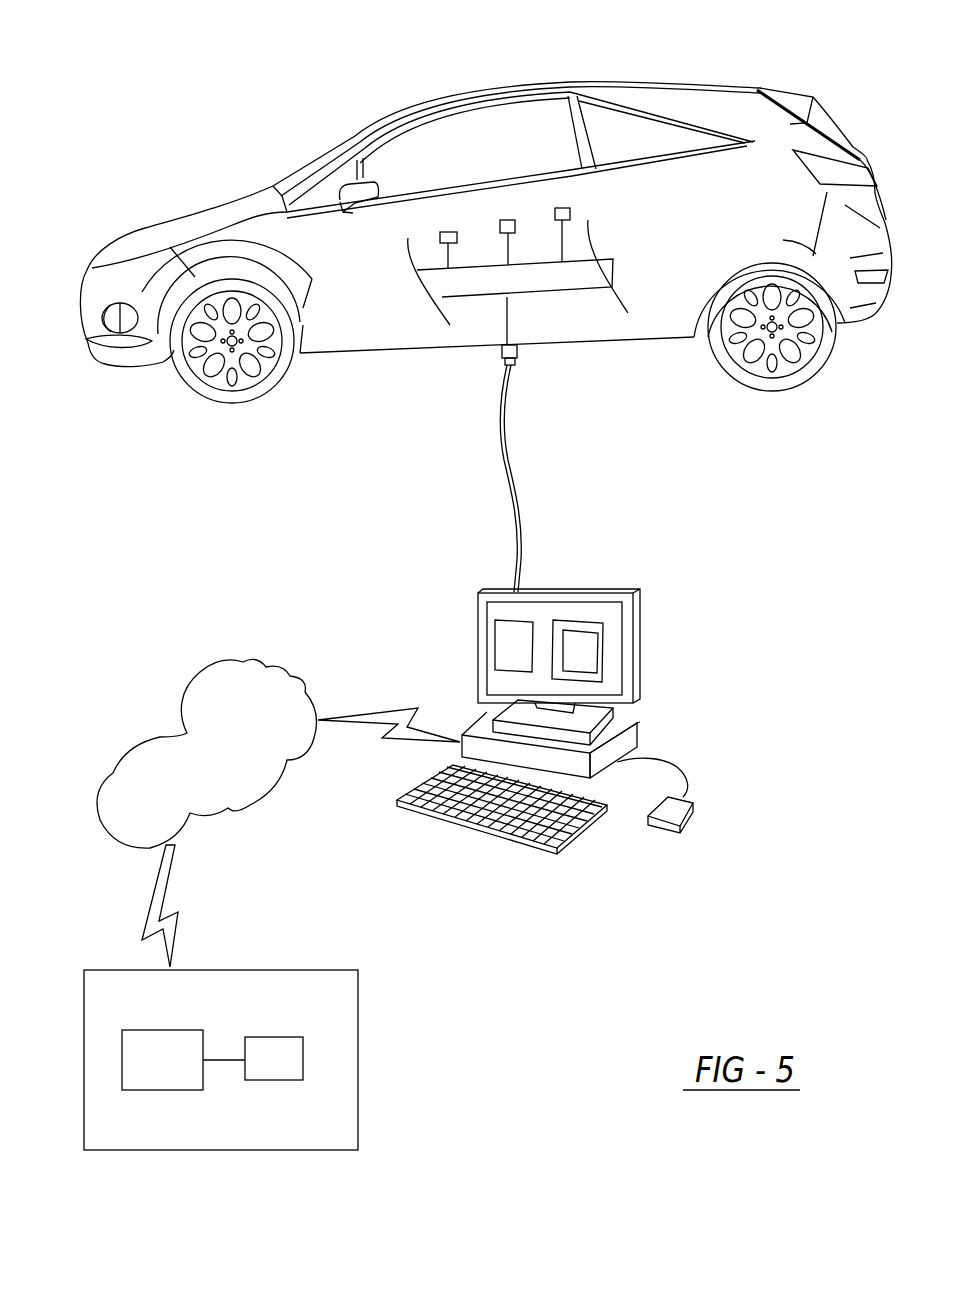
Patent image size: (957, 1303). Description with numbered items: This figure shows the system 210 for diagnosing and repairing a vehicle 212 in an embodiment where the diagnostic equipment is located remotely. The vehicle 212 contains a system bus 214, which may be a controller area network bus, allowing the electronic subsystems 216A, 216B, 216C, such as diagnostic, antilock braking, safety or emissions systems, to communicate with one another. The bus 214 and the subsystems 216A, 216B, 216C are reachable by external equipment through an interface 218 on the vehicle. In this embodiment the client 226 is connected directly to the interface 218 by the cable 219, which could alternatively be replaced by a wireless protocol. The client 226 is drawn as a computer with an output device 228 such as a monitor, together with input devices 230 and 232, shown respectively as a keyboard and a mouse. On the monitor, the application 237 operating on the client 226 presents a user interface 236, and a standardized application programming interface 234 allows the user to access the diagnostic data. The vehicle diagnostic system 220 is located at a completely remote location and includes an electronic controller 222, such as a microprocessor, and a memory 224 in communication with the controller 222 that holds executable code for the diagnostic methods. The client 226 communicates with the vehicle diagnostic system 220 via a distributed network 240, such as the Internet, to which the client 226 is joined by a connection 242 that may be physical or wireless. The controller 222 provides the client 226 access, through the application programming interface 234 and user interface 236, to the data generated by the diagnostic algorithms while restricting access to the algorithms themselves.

The system 210 is at (138, 130).
The vehicle 212 is at (693, 72).
The system bus 214 is at (543, 275).
The electronic subsystem 216A is at (447, 232).
The electronic subsystem 216B is at (506, 220).
The electronic subsystem 216C is at (560, 208).
The interface 218 is at (503, 348).
The cable 219 is at (508, 463).
The vehicle diagnostic system 220 is at (358, 1112).
The electronic controller 222 is at (167, 1090).
The memory 224 is at (300, 1058).
The client 226 is at (637, 737).
The output device 228 is at (640, 657).
The input device 230 is at (473, 823).
The input device 232 is at (657, 830).
The application programming interface 234 is at (495, 642).
The user interface 236 is at (588, 650).
The application 237 is at (577, 620).
The distributed network 240 is at (208, 670).
The connection 242 is at (388, 713).